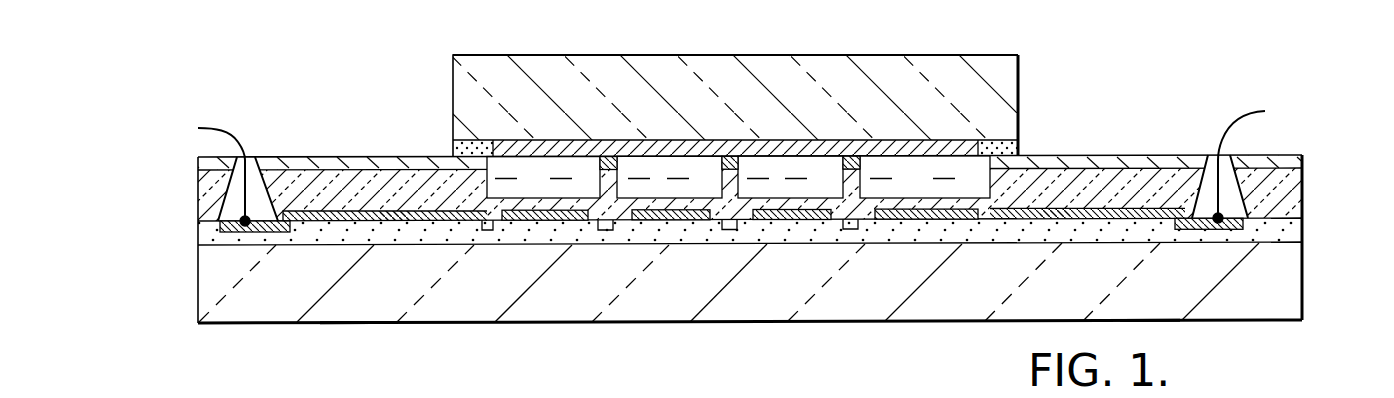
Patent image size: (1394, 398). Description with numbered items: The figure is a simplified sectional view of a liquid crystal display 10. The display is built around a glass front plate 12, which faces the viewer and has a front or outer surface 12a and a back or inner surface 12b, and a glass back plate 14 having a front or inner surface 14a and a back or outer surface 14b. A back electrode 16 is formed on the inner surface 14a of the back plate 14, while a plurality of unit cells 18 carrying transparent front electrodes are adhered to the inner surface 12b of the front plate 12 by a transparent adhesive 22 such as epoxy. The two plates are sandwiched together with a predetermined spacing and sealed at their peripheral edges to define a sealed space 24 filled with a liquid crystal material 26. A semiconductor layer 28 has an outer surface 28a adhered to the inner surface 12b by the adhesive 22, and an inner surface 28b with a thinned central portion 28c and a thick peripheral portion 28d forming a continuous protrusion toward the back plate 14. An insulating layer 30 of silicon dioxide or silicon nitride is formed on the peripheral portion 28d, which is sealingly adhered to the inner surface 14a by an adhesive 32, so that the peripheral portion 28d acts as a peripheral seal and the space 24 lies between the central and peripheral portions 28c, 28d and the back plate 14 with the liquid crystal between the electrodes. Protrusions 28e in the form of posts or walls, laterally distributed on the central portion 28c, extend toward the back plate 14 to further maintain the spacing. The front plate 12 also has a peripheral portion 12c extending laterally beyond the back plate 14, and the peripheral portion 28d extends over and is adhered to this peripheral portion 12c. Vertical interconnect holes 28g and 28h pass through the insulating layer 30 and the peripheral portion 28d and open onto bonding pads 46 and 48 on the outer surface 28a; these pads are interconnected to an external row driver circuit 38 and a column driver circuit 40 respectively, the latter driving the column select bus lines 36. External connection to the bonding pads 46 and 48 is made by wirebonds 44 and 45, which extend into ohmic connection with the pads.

The liquid crystal display 10 is at (289, 93).
The glass front plate 12 is at (1302, 283).
The front or outer surface 12a is at (1252, 323).
The back or inner surface 12b is at (1287, 233).
The peripheral portion 12c is at (343, 323).
The glass back plate 14 is at (1018, 90).
The front or inner surface 14a is at (1008, 138).
The back or outer surface 14b is at (1018, 55).
The back electrode 16 is at (937, 138).
The unit cells 18 is at (560, 222).
The transparent adhesive 22 is at (325, 240).
The sealed space 24 is at (738, 177).
The liquid crystal material 26 is at (752, 169).
The semiconductor layer 28 is at (1290, 198).
The outer surface 28a is at (1293, 212).
The inner surface 28b is at (1278, 172).
The thinned central portion 28c is at (967, 195).
The thick peripheral portion 28d is at (325, 182).
The protrusions 28e is at (600, 179).
The vertical interconnect hole 28g is at (227, 196).
The vertical interconnect hole 28h is at (1250, 192).
The insulating layer 30 is at (1283, 156).
The adhesive 32 is at (455, 148).
The column select bus lines 36 is at (486, 231).
The external row driver circuit 38 is at (390, 222).
The column driver circuit 40 is at (1050, 219).
The wirebond 44 is at (226, 131).
The wirebond 45 is at (1250, 112).
The bonding pad 46 is at (286, 236).
The bonding pad 48 is at (1200, 232).